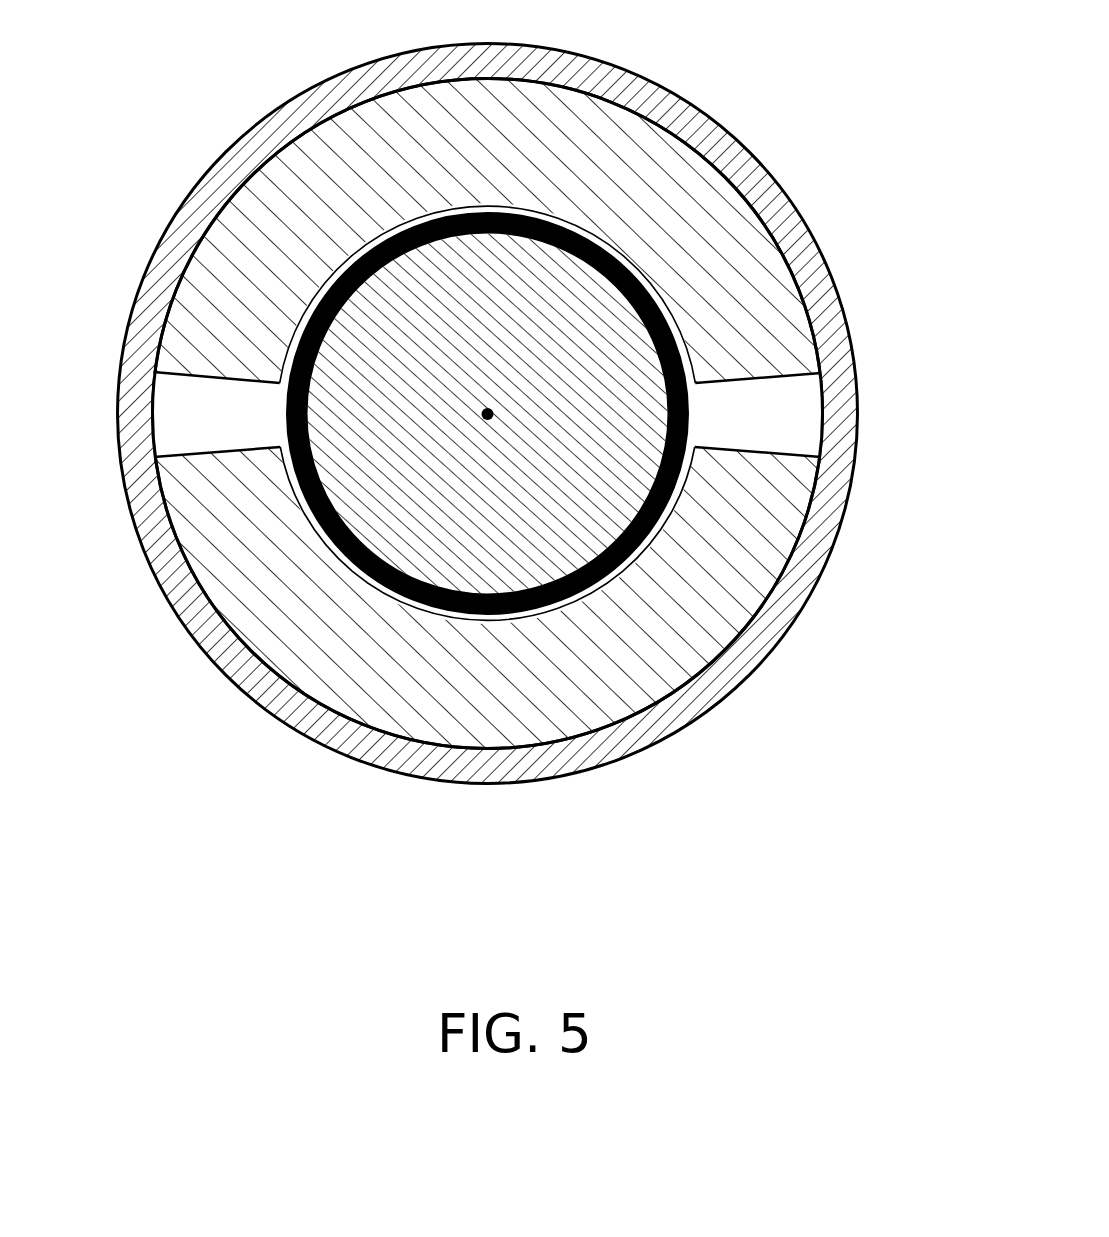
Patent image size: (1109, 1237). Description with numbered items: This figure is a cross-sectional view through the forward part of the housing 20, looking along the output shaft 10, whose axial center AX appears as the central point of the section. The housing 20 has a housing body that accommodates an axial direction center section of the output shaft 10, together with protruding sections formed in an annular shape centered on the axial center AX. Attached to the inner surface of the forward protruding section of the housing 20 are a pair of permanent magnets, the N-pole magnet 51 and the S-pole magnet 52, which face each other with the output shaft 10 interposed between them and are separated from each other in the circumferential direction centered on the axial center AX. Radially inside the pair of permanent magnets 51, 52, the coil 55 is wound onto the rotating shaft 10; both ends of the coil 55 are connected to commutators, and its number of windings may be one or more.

The N-pole magnet 51 is at (607, 135).
The housing 20 is at (782, 190).
The S-pole magnet 52 is at (620, 702).
The coil 55 is at (688, 415).
The output shaft 10 is at (625, 358).
The axial center AX is at (488, 414).